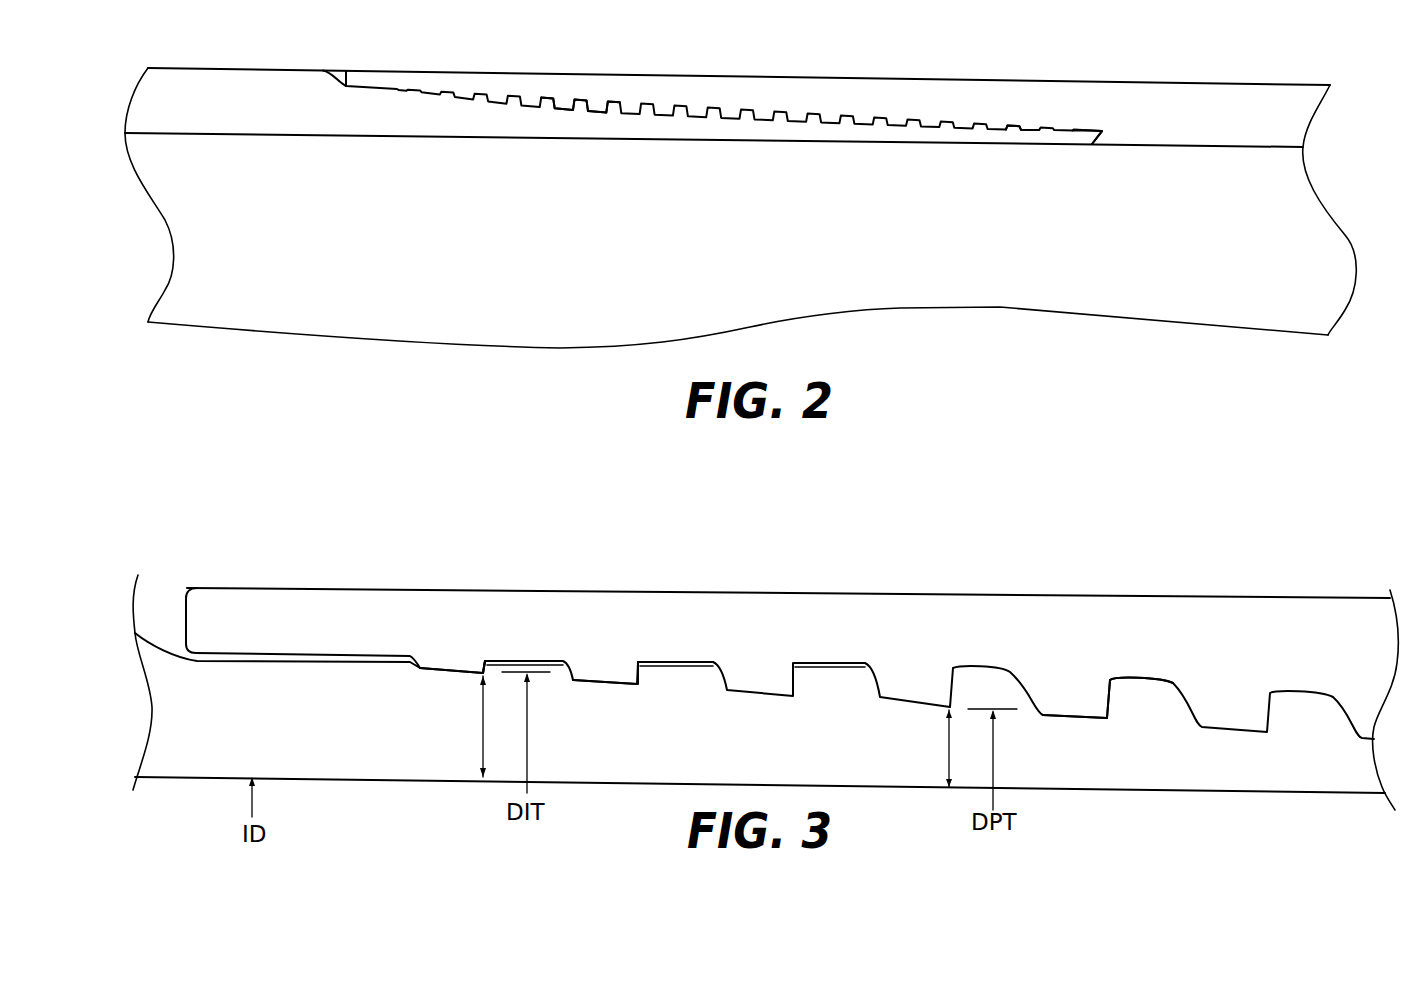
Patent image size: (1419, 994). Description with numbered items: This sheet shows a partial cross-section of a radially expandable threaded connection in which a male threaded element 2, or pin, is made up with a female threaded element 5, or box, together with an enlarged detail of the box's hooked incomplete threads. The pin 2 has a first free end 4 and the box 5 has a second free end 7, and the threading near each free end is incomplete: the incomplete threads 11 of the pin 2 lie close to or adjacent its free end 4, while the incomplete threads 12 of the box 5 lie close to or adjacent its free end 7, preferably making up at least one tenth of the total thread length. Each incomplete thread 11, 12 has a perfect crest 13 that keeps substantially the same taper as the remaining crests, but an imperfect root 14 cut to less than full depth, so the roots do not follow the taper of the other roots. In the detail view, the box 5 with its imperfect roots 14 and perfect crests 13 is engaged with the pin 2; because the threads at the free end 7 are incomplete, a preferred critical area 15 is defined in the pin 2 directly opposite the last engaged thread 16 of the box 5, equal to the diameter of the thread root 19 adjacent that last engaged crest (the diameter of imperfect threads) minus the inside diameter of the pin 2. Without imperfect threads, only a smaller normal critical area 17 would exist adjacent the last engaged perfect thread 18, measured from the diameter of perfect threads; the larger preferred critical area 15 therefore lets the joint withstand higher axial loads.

In FIG. 3, the male threaded element 2 is at (230, 713).
In FIG. 2, the first free end 4 is at (1073, 138).
In FIG. 2, the female threaded element 5 is at (1217, 110).
In FIG. 3, the female threaded element 5 is at (1072, 665).
In FIG. 2, the second free end 7 is at (372, 77).
In FIG. 3, the second free end 7 is at (343, 618).
In FIG. 2, the incomplete threads of the pin 11 is at (1010, 137).
In FIG. 2, the incomplete threads of the box 12 is at (470, 88).
In FIG. 3, the incomplete threads of the box 12 is at (592, 670).
In FIG. 3, the perfect crests 13 is at (610, 690).
In FIG. 3, the imperfect roots 14 is at (678, 666).
In FIG. 3, the preferred critical area 15 is at (482, 702).
In FIG. 3, the last engaged thread 16 is at (443, 663).
In FIG. 3, the normal critical area 17 is at (945, 748).
In FIG. 3, the last engaged perfect thread 18 is at (908, 683).
In FIG. 3, the thread root 19 is at (476, 666).